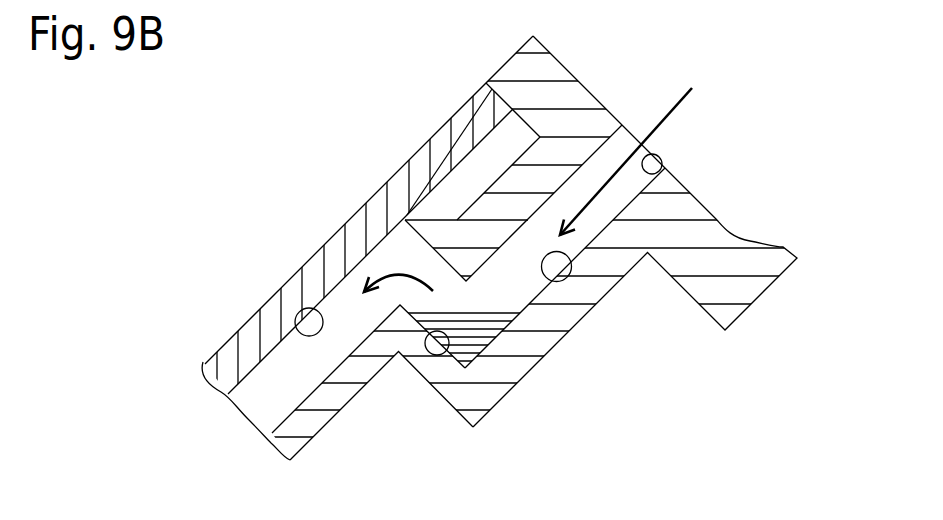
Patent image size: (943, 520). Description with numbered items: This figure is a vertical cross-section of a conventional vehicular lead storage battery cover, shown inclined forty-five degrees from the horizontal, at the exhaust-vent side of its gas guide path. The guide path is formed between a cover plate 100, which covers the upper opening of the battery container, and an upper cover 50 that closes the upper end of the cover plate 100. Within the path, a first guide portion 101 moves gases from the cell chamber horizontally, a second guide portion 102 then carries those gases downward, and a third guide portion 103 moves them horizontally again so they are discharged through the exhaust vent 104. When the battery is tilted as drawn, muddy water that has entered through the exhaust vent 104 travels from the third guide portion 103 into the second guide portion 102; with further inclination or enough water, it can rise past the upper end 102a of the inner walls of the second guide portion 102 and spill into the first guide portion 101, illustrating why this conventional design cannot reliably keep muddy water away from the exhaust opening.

The upper cover 50 is at (440, 143).
The cover plate 100 is at (690, 216).
The first guide portion 101 is at (300, 310).
The second guide portion 102 is at (448, 352).
The upper end of inner walls 102a is at (405, 305).
The third guide portion 103 is at (588, 270).
The exhaust vent 104 is at (662, 157).